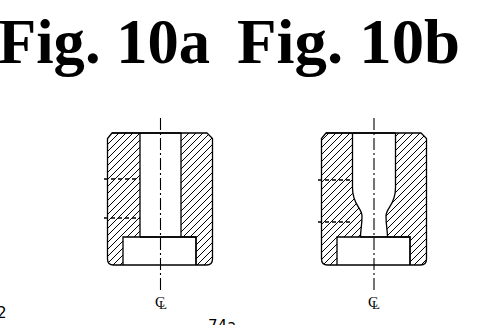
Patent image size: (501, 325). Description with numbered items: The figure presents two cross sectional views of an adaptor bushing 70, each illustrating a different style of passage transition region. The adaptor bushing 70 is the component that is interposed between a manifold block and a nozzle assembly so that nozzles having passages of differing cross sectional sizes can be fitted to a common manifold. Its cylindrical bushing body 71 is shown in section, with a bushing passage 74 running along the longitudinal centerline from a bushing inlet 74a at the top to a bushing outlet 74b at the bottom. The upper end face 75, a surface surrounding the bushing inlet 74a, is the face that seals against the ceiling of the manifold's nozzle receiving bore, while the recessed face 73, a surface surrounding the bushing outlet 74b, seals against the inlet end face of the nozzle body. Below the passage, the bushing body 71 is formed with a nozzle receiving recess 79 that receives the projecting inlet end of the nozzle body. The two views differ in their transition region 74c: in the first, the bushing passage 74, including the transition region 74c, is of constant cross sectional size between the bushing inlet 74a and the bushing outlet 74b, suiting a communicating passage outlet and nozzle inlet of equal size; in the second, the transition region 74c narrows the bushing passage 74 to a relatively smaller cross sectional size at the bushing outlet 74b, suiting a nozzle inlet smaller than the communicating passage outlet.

In FIG. 10A, the adaptor bushing 70 is at (99, 128).
In FIG. 10B, the adaptor bushing 70 is at (312, 128).
In FIG. 10A, the bushing body 71 is at (201, 147).
In FIG. 10B, the bushing body 71 is at (415, 170).
In FIG. 10A, the recessed face 73 is at (197, 239).
In FIG. 10B, the recessed face 73 is at (410, 239).
In FIG. 10A, the bushing passage 74 is at (151, 180).
In FIG. 10B, the bushing passage 74 is at (384, 180).
In FIG. 10A, the bushing inlet 74a is at (165, 131).
In FIG. 10B, the bushing inlet 74a is at (379, 131).
In FIG. 10A, the bushing outlet 74b is at (161, 241).
In FIG. 10B, the bushing outlet 74b is at (374, 241).
In FIG. 10A, the transition region 74c is at (104, 179).
In FIG. 10B, the transition region 74c is at (318, 180).
In FIG. 10A, the end face 75 is at (137, 133).
In FIG. 10B, the end face 75 is at (351, 133).
In FIG. 10A, the nozzle receiving recess 79 is at (142, 248).
In FIG. 10B, the nozzle receiving recess 79 is at (352, 248).